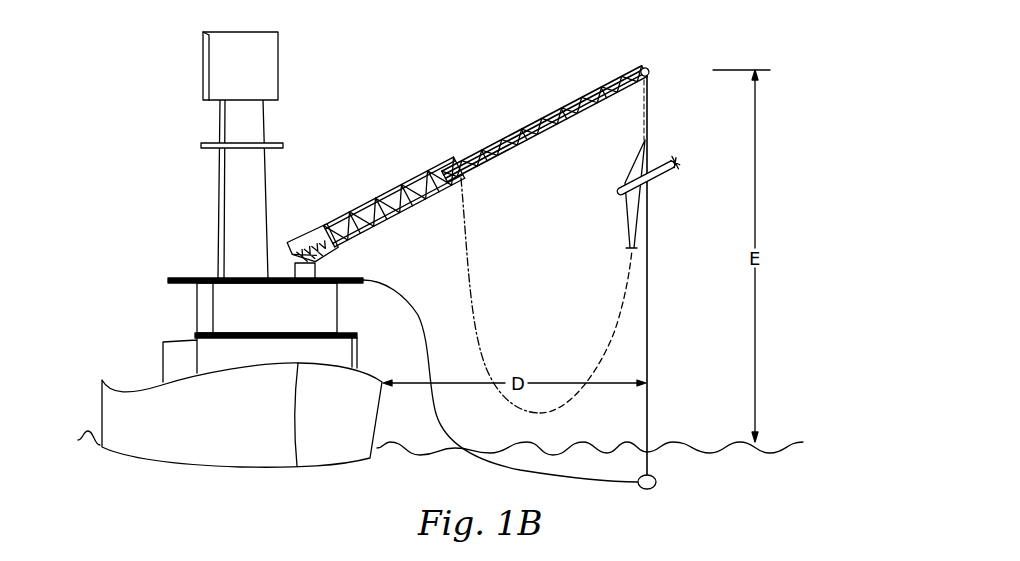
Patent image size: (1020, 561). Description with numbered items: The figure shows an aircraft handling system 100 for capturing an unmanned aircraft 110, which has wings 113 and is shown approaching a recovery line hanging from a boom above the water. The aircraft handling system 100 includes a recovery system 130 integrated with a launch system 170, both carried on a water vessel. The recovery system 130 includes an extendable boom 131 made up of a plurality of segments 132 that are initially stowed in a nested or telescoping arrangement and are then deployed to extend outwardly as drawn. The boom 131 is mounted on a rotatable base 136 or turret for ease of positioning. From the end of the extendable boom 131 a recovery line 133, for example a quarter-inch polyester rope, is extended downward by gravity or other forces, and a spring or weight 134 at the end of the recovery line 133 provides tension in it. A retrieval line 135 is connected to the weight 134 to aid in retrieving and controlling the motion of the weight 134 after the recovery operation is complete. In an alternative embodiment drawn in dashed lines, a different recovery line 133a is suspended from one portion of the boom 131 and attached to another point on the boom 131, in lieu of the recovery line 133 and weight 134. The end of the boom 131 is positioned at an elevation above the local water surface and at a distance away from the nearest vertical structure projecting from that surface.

The aircraft handling system 100 is at (308, 173).
The launch system 170 is at (358, 193).
The recovery system 130 is at (467, 164).
The extendable boom 131 is at (478, 172).
The segments 132 is at (598, 92).
The recovery line 133 is at (647, 108).
The recovery line 133a is at (628, 288).
The wings 113 is at (633, 160).
The unmanned aircraft 110 is at (657, 180).
The retrieval line 135 is at (440, 320).
The rotatable base 136 is at (315, 272).
The weight 134 is at (656, 482).